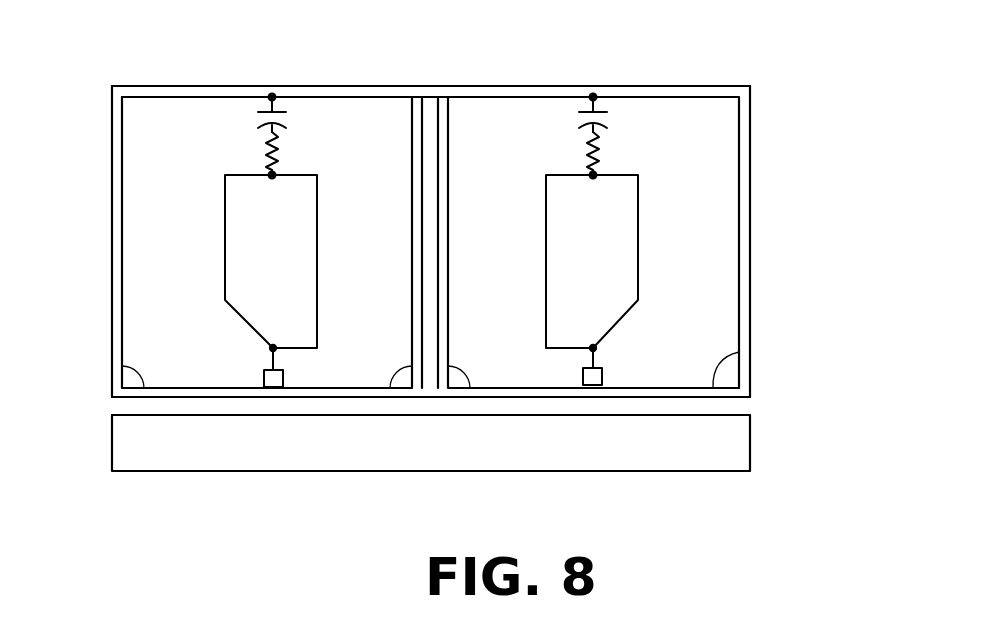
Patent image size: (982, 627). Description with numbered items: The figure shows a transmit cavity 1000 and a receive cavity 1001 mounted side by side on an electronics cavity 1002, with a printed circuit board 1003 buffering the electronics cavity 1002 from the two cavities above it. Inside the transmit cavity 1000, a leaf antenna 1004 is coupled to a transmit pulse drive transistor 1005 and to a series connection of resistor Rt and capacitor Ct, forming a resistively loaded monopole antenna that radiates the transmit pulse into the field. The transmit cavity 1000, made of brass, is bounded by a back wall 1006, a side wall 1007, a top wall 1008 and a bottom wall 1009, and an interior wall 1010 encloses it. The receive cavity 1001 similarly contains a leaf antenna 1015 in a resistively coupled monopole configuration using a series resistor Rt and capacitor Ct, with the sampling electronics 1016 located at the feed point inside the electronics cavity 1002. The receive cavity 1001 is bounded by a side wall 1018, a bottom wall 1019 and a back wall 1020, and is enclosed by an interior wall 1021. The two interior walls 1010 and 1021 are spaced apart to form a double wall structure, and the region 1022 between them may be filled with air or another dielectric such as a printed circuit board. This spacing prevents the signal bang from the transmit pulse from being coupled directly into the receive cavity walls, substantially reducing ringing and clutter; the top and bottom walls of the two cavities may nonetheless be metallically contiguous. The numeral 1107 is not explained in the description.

The transmit cavity 1000 is at (343, 53).
The receive cavity 1001 is at (600, 62).
The electronics cavity 1002 is at (752, 450).
The printed circuit board 1003 is at (752, 403).
The leaf antenna 1004 is at (243, 265).
The transmit pulse drive transistor 1005 is at (263, 388).
The back wall 1006 is at (220, 157).
The side wall 1007 is at (112, 284).
The top wall 1008 is at (134, 86).
The bottom wall 1009 is at (122, 370).
The interior wall 1010 is at (391, 388).
The leaf antenna 1015 is at (618, 267).
The sampling electronics 1016 is at (597, 386).
The side wall 1018 is at (750, 240).
The bottom wall 1019 is at (739, 352).
The back wall 1020 is at (541, 149).
The interior wall 1021 is at (468, 388).
The region between the walls 1022 is at (430, 113).
The inner wall layer 1107 is at (750, 84).